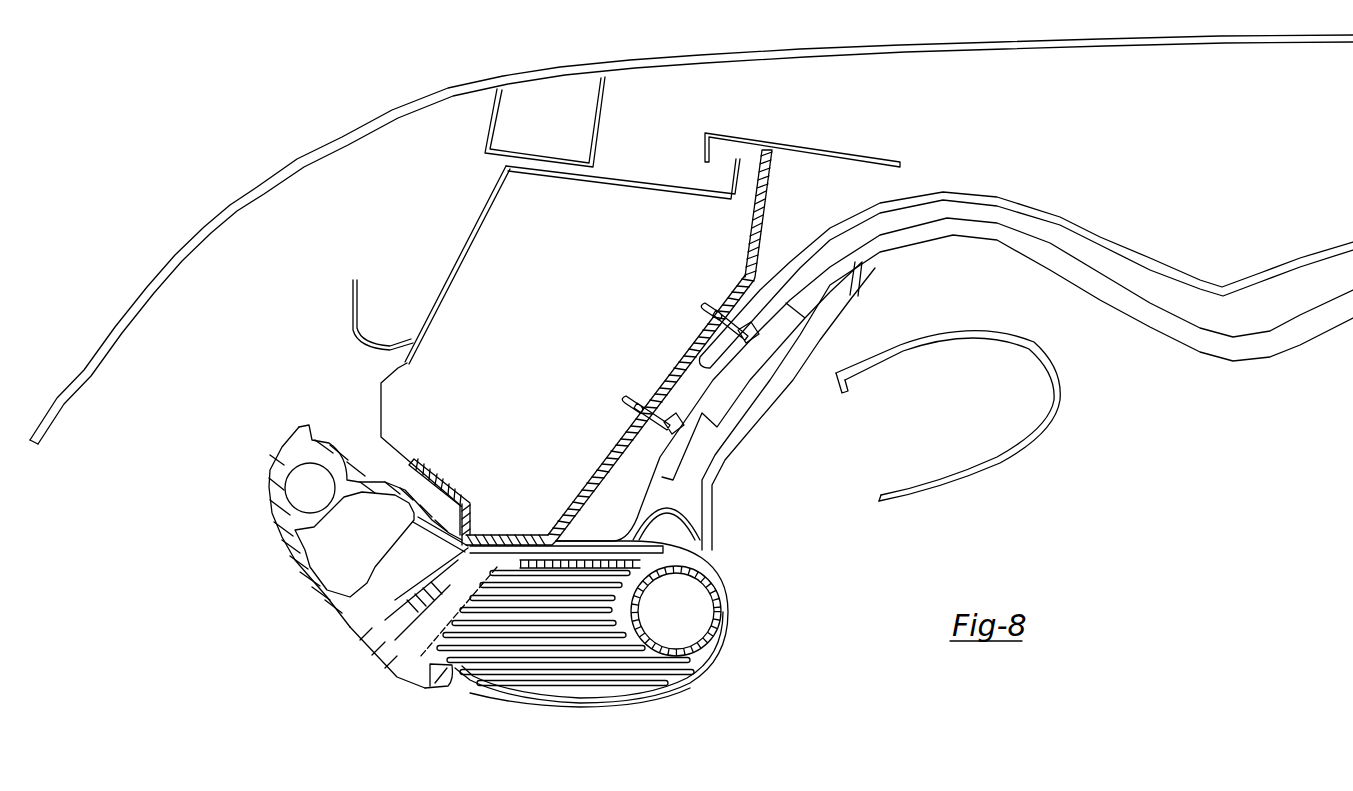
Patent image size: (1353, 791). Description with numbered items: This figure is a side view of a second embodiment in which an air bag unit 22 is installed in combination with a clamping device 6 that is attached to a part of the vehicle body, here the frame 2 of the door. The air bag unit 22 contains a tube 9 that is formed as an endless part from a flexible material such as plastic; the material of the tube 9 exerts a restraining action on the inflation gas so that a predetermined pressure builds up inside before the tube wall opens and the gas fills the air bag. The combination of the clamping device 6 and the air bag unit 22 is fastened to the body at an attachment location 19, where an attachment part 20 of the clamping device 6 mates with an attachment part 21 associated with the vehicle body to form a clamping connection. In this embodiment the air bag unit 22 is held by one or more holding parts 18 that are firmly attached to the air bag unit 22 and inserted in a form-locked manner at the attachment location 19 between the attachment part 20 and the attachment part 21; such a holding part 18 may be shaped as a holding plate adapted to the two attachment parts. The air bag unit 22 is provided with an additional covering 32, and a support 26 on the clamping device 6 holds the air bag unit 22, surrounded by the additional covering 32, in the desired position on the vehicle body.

The frame 2 is at (408, 422).
The attachment location 19 is at (480, 526).
The attachment part 20 is at (348, 622).
The attachment part 21 is at (383, 640).
The clamping device 6 is at (377, 665).
The holding part 18 is at (399, 650).
The support 26 is at (440, 680).
The air bag unit 22 is at (699, 679).
The tube 9 is at (721, 602).
The additional covering 32 is at (553, 700).